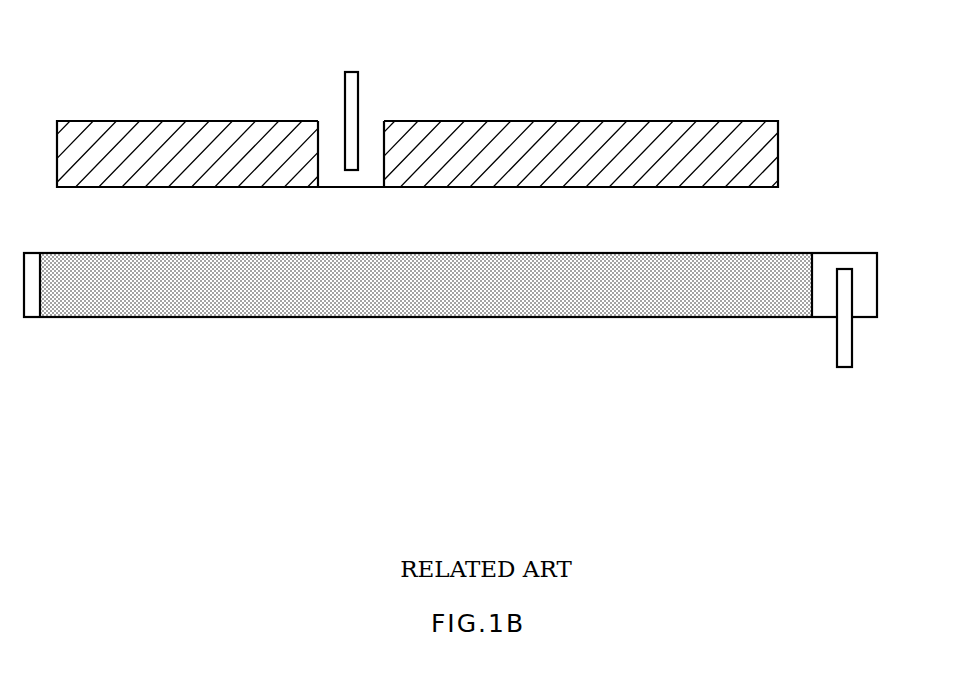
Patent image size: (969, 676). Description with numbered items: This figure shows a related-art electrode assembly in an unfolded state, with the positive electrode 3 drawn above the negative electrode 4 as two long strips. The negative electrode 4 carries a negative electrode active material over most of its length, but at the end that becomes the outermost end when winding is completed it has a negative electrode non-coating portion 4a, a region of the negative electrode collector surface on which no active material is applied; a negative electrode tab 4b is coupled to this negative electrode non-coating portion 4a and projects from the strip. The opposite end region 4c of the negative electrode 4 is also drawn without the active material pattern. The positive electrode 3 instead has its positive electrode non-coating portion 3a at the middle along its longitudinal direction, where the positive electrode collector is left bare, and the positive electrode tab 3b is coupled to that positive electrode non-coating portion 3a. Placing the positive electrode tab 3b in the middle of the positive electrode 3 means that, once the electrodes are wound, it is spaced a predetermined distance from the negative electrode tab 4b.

The positive electrode 3 is at (622, 92).
The positive electrode non-coating portion 3a is at (370, 132).
The positive electrode tab 3b is at (349, 88).
The negative electrode 4 is at (621, 346).
The negative electrode non-coating portion 4a is at (826, 307).
The negative electrode tab 4b is at (845, 350).
The left end compartment of second member 4c is at (33, 307).